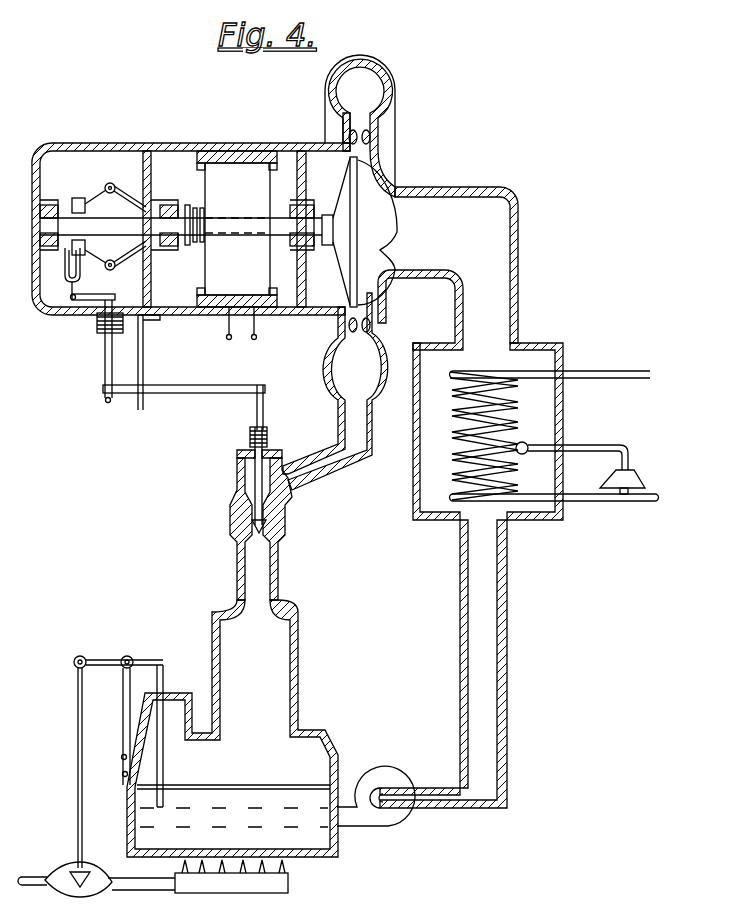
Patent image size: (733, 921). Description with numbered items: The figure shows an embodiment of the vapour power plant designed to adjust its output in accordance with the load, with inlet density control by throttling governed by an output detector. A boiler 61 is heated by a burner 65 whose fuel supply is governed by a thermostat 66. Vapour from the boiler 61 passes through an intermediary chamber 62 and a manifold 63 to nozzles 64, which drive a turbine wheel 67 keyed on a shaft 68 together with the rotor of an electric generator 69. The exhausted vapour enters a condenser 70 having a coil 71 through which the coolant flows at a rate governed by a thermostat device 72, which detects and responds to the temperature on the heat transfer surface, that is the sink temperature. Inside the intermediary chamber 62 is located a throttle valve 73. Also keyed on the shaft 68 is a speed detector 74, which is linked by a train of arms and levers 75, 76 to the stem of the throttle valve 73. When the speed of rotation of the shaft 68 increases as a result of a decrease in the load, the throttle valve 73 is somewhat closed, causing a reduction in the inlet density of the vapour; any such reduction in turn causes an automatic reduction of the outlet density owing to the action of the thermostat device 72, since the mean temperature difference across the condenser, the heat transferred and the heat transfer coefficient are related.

The boiler 61 is at (298, 686).
The intermediary chamber 62 is at (284, 507).
The manifold 63 is at (360, 387).
The nozzles 64 is at (368, 138).
The burner 65 is at (270, 888).
The thermostat 66 is at (100, 660).
The turbine wheel 67 is at (385, 203).
The shaft 68 is at (278, 227).
The electric generator 69 is at (226, 176).
The condenser 70 is at (550, 352).
The coil 71 is at (466, 374).
The thermostat device 72 is at (620, 462).
The throttle valve 73 is at (252, 501).
The speed detector 74 is at (105, 187).
The arm 75 is at (72, 290).
The lever 76 is at (105, 373).